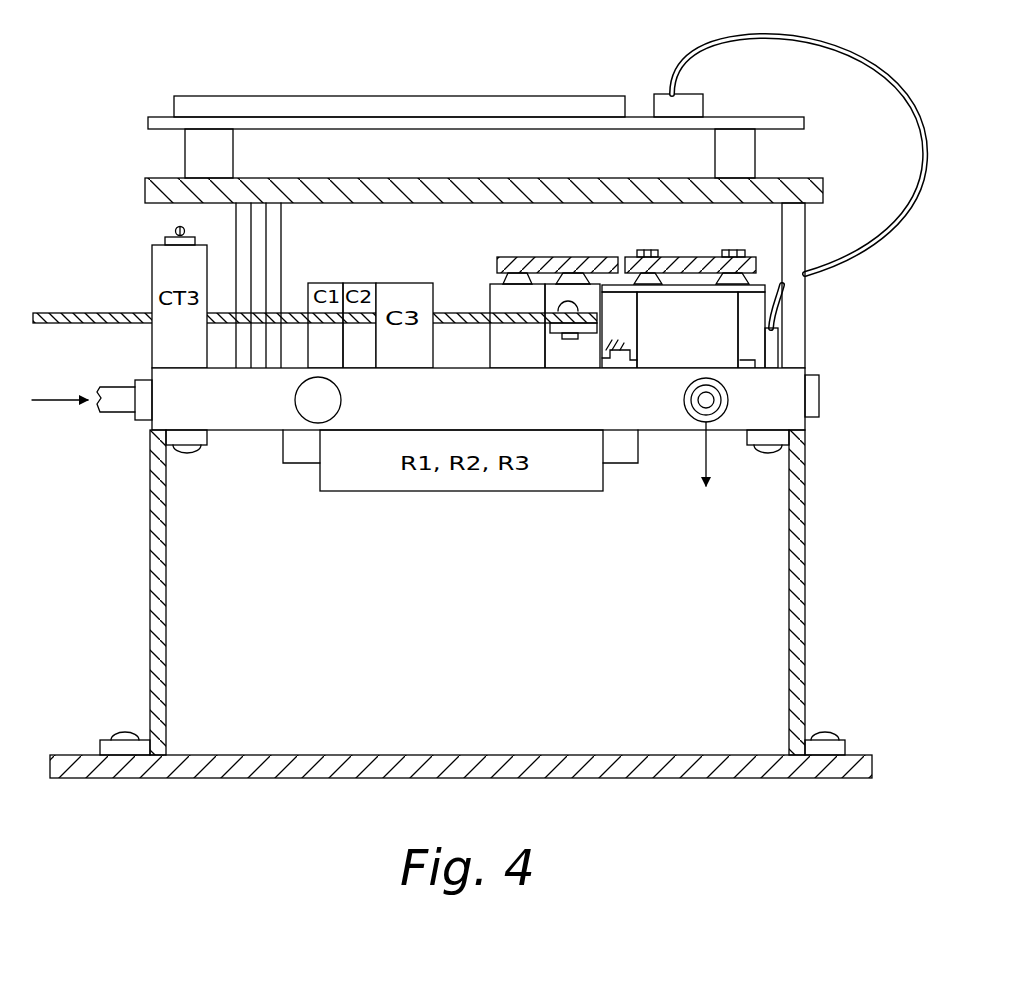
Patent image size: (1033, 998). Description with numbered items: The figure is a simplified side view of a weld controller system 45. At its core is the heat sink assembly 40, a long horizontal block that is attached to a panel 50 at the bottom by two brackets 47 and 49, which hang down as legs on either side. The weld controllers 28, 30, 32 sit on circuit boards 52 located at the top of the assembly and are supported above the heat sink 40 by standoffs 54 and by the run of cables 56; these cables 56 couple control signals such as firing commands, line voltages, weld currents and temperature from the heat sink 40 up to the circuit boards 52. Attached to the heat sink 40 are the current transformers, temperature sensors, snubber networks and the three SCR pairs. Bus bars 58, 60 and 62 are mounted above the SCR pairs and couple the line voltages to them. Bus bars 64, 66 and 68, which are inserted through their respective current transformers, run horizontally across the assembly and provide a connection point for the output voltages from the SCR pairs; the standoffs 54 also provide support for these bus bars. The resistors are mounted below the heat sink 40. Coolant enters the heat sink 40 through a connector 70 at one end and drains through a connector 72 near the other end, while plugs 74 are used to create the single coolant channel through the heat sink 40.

The weld controller 28 is at (386, 71).
The weld controller 30 is at (386, 71).
The weld controller 32 is at (185, 96).
The circuit boards 52 is at (143, 120).
The cables 56 is at (877, 82).
The standoffs 54 is at (262, 232).
The bus bar 64 is at (307, 288).
The bus bar 66 is at (307, 288).
The bus bar 68 is at (97, 313).
The bus bar 58 is at (522, 258).
The bus bar 60 is at (577, 258).
The bus bar 62 is at (680, 257).
The heat sink assembly 40 is at (483, 448).
The plugs 74 is at (302, 411).
The connector 72 is at (702, 406).
The connector 70 is at (117, 387).
The weld controller system 45 is at (461, 604).
The bracket 47 is at (157, 558).
The bracket 49 is at (789, 638).
The panel 50 is at (358, 755).